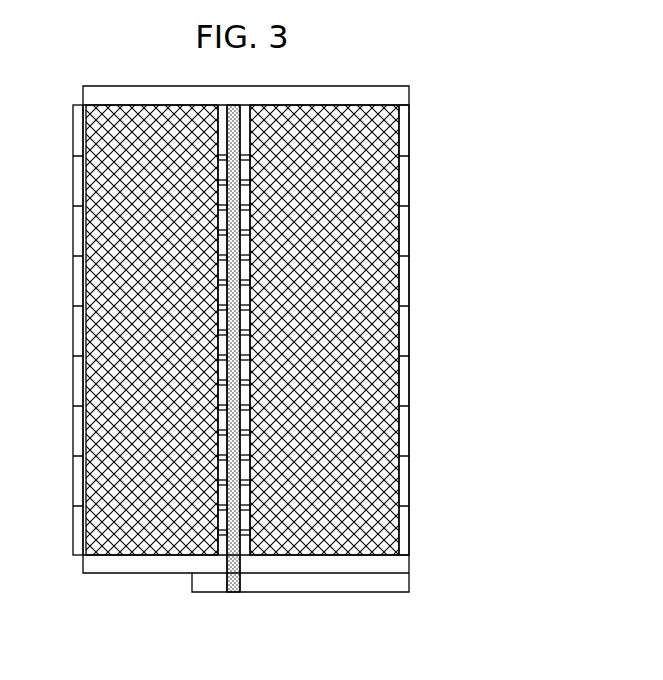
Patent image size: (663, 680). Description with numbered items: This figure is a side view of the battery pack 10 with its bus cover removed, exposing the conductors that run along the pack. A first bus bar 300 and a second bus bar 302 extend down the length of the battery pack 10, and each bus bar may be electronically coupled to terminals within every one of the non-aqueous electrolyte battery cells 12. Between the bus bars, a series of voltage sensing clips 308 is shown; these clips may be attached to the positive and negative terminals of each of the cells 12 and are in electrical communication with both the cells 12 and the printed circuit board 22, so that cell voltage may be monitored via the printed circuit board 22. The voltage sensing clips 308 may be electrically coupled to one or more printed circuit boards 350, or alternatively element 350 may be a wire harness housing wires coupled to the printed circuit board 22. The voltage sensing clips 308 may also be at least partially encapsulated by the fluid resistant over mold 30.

The battery pack 10 is at (558, 294).
The non-aqueous electrolyte battery cells 12 is at (80, 130).
The printed circuit board 22 is at (279, 589).
The fluid resistant over mold 30 is at (236, 595).
The first bus bar 300 is at (108, 106).
The second bus bar 302 is at (331, 118).
The voltage sensing clips 308 is at (247, 182).
The printed circuit boards 350 is at (226, 560).